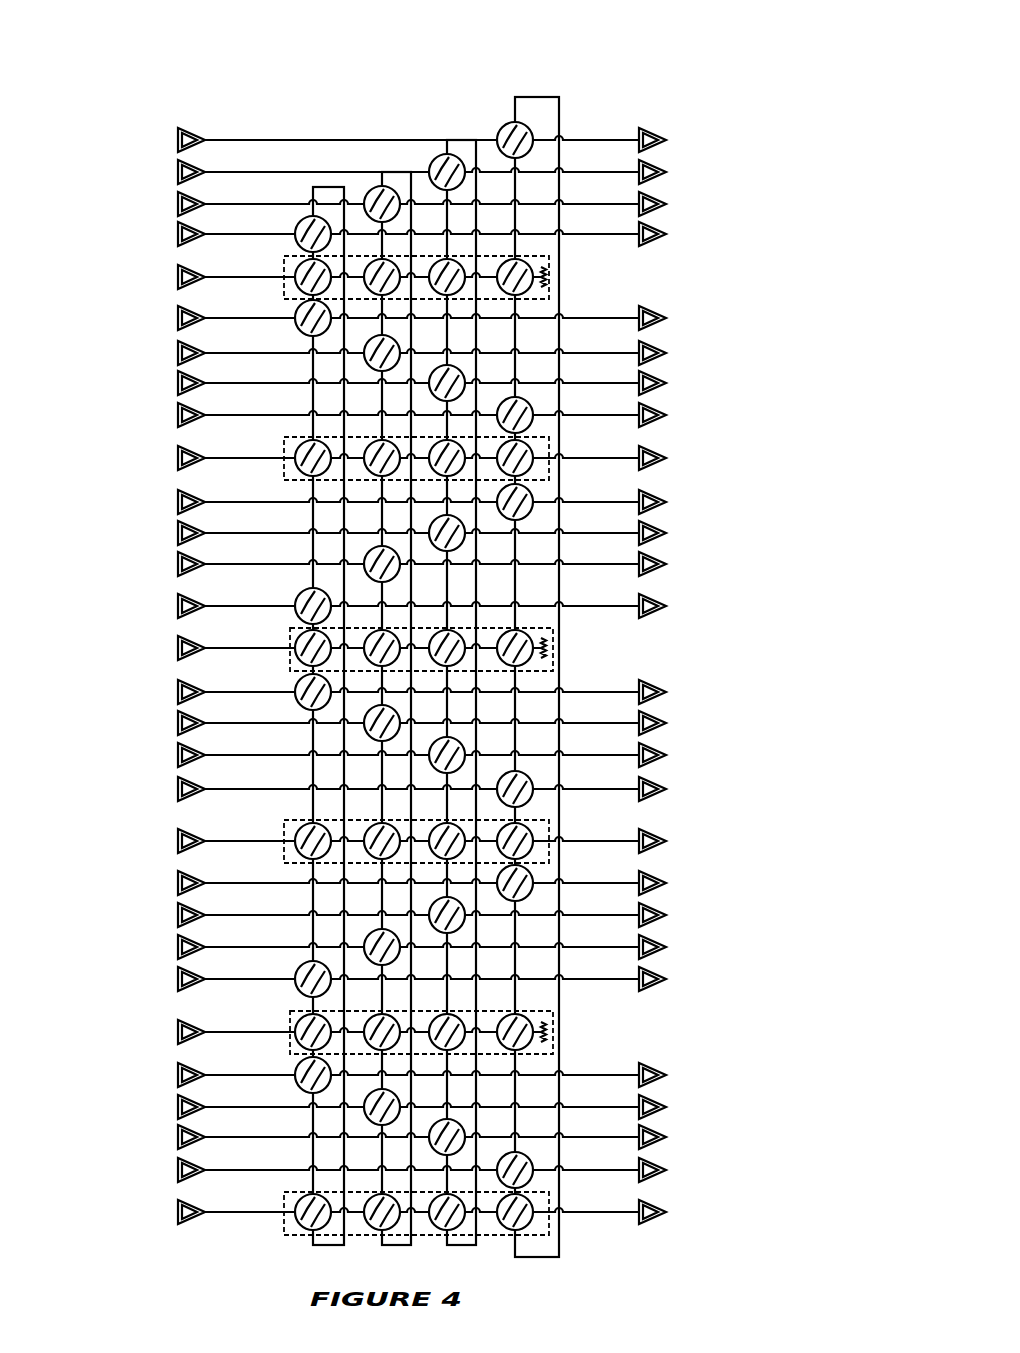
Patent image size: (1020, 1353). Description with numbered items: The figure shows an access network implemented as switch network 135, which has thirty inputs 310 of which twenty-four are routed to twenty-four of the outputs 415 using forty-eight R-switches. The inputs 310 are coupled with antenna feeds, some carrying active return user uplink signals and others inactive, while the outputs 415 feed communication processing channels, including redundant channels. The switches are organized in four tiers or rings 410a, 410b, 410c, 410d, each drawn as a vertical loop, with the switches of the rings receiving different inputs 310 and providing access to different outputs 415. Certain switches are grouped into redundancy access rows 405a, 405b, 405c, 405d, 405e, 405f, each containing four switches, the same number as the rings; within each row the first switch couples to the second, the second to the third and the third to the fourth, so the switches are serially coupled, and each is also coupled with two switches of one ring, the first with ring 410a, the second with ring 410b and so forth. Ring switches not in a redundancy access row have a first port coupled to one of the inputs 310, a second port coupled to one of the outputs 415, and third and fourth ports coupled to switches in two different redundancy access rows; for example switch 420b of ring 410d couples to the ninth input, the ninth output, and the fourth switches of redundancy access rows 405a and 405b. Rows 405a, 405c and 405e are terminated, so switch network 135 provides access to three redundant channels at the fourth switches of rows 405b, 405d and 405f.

The switch network 135 is at (146, 102).
The ring 410a is at (290, 158).
The ring 410b is at (364, 150).
The ring 410c is at (461, 120).
The ring 410d is at (533, 84).
The inputs 310 is at (132, 676).
The outputs 415 is at (739, 676).
The redundancy access row 405a is at (551, 268).
The redundancy access row 405b is at (549, 450).
The redundancy access row 405c is at (553, 645).
The redundancy access row 405d is at (553, 835).
The redundancy access row 405e is at (553, 1022).
The redundancy access row 405f is at (553, 1205).
The switch 420b is at (530, 403).